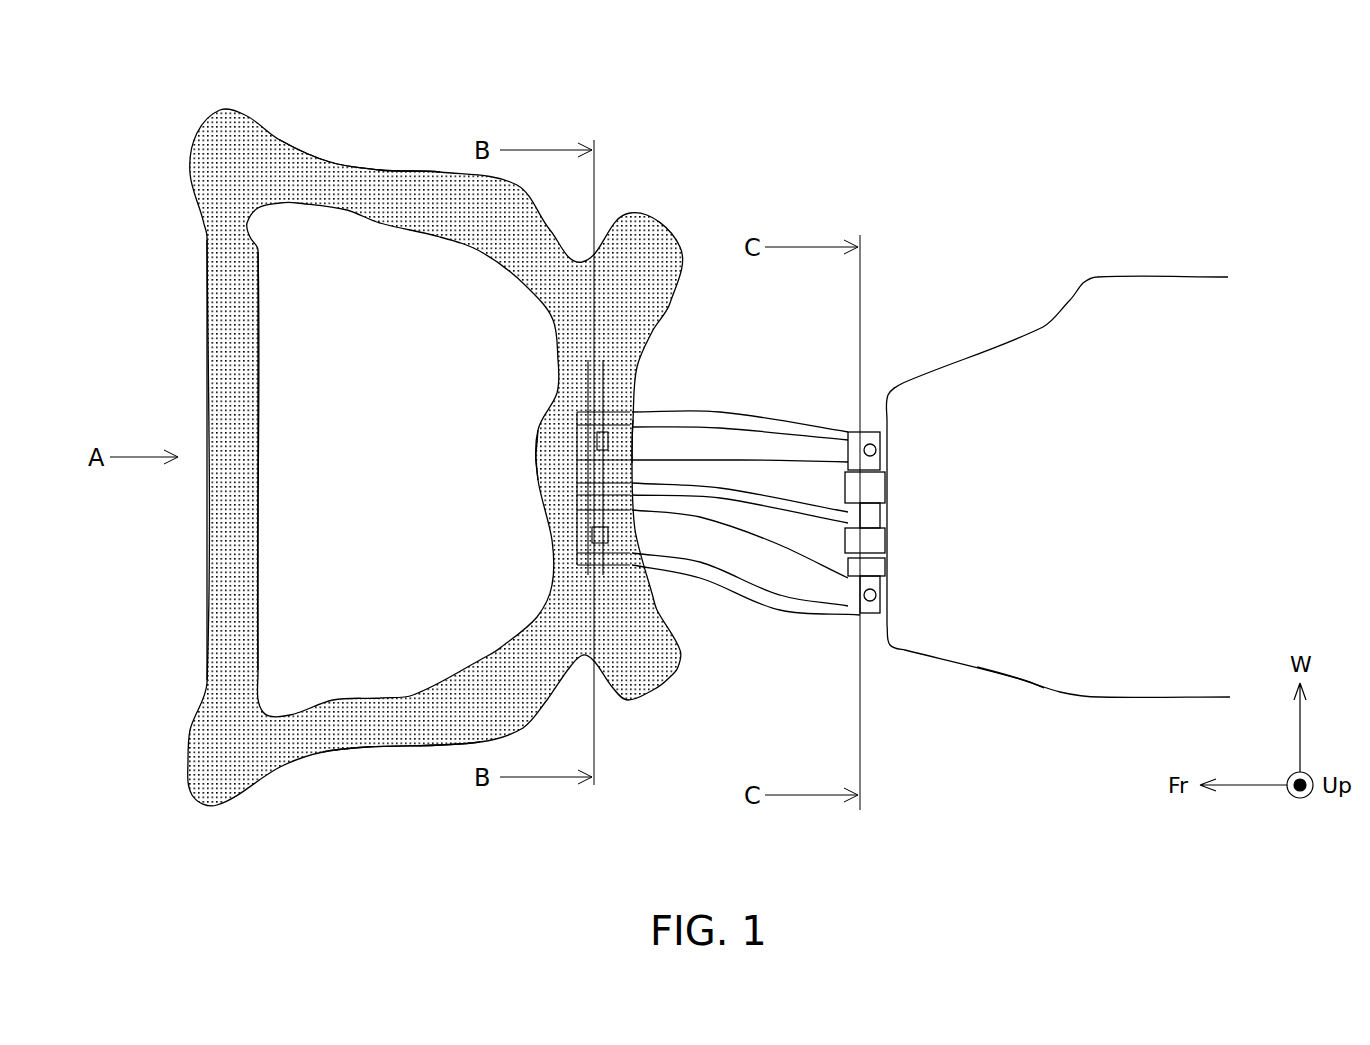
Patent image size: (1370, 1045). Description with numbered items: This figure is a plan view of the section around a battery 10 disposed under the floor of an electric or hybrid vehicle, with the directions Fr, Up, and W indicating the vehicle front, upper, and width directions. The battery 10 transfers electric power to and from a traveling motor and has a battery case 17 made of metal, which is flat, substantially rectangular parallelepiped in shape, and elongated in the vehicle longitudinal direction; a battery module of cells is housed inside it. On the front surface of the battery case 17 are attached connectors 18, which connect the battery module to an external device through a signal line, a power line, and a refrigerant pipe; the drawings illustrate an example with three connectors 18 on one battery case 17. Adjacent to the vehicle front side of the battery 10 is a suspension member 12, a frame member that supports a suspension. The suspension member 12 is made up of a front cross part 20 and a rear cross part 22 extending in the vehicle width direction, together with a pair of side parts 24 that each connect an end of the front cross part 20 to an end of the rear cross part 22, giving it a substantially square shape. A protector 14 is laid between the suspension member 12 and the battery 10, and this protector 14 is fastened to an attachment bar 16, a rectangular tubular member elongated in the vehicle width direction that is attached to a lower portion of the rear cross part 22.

The battery 10 is at (1071, 529).
The suspension member 12 is at (400, 143).
The protector 14 is at (728, 413).
The attachment bar 16 is at (558, 375).
The battery case 17 is at (1013, 678).
The connector 18 is at (847, 478).
The front cross part 20 is at (210, 543).
The rear cross part 22 is at (540, 490).
The side part 24 is at (328, 165).